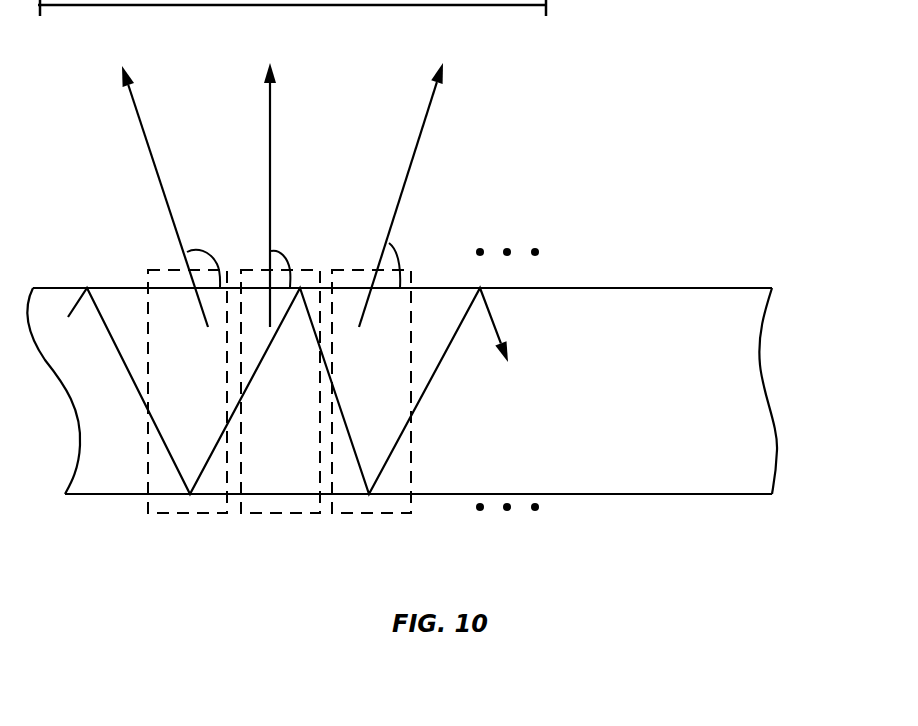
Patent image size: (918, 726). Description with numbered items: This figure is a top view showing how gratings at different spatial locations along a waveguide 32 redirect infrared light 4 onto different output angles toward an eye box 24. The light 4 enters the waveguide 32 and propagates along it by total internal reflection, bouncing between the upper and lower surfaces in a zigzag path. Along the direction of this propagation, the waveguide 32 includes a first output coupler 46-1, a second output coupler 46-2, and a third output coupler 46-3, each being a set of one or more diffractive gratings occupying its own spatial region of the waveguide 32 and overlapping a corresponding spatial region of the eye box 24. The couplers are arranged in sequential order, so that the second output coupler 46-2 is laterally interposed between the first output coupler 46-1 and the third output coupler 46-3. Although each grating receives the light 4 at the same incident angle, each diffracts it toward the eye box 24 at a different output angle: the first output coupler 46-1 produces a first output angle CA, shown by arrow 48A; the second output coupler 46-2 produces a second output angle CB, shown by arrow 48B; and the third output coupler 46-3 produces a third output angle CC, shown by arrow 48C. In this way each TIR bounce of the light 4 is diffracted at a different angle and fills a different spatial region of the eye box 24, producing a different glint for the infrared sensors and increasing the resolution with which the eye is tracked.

The eye box 24 is at (548, 6).
The waveguide 32 is at (755, 365).
The light 4 is at (108, 336).
The first output coupler 46-1 is at (188, 513).
The second output coupler 46-2 is at (275, 513).
The third output coupler 46-3 is at (368, 513).
The arrow 48A is at (138, 110).
The arrow 48B is at (271, 110).
The arrow 48C is at (433, 115).
The first output angle CA is at (203, 248).
The second output angle CB is at (283, 252).
The third output angle CC is at (400, 255).